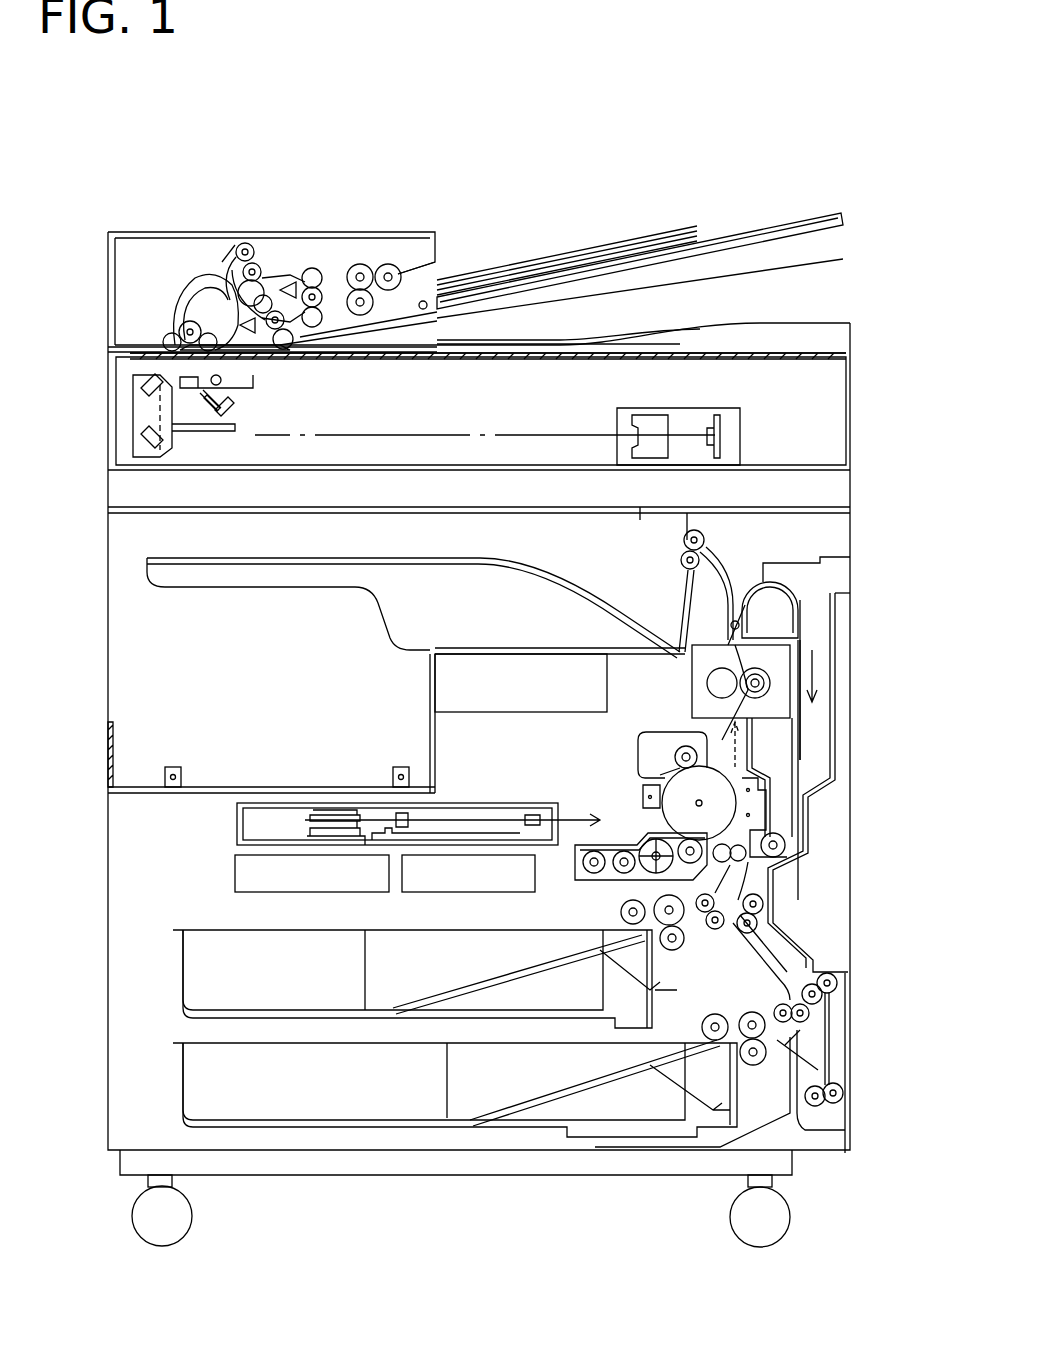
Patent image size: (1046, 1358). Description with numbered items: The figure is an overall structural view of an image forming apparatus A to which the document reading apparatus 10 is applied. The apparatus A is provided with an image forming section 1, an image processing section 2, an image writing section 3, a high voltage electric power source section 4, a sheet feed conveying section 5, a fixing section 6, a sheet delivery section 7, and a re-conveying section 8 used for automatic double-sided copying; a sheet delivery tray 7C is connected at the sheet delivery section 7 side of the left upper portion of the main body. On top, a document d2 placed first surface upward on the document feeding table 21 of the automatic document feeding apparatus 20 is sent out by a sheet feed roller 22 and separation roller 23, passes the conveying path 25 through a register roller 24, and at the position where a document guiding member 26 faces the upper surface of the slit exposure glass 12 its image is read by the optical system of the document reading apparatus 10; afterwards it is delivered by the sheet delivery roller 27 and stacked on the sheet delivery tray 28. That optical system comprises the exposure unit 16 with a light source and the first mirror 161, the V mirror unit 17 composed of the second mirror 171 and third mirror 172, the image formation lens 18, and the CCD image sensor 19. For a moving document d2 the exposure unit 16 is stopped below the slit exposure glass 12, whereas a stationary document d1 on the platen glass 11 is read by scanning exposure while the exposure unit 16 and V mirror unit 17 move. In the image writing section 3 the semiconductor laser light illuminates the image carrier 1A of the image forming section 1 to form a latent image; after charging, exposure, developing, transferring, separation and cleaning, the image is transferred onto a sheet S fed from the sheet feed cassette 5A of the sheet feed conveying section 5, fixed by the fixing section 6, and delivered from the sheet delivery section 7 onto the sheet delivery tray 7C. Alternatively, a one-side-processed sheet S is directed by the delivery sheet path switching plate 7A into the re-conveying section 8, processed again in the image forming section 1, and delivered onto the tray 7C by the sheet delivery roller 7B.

The image forming section 1 is at (622, 791).
The image carrier 1A is at (640, 770).
The image processing section 2 is at (520, 690).
The image writing section 3 is at (237, 825).
The high voltage electric power source section 4 is at (320, 890).
The sheet feed conveying section 5 is at (144, 931).
The sheet feed cassette 5A is at (213, 945).
The fixing section 6 is at (690, 683).
The sheet delivery section 7 is at (663, 540).
The delivery sheet path switching plate 7A is at (748, 600).
The sheet delivery roller 7B is at (703, 535).
The sheet delivery tray 7C is at (538, 566).
The re-conveying section (ADU) 8 is at (795, 828).
The document reading apparatus 10 is at (699, 378).
The platen glass 11 is at (483, 345).
The slit exposure glass 12 is at (240, 362).
The exposure unit 16 is at (298, 425).
The V mirror unit 17 is at (118, 431).
The image formation lens 18 is at (650, 410).
The CCD image sensor 19 is at (720, 427).
The automatic document feeding apparatus 20 is at (757, 213).
The document feeding table 21 is at (722, 236).
The sheet feed roller 22 is at (398, 264).
The separation roller 23 is at (357, 263).
The register roller 24 is at (306, 277).
The conveying path 25 is at (177, 312).
The document guiding member 26 is at (208, 340).
The sheet delivery roller 27 is at (323, 306).
The sheet delivery tray 28 is at (568, 340).
The first mirror 161 is at (225, 398).
The second mirror 171 is at (140, 395).
The third mirror 172 is at (130, 430).
The image forming apparatus A is at (92, 861).
The sheet S is at (660, 550).
The document d1 is at (660, 340).
The document d2 is at (593, 240).